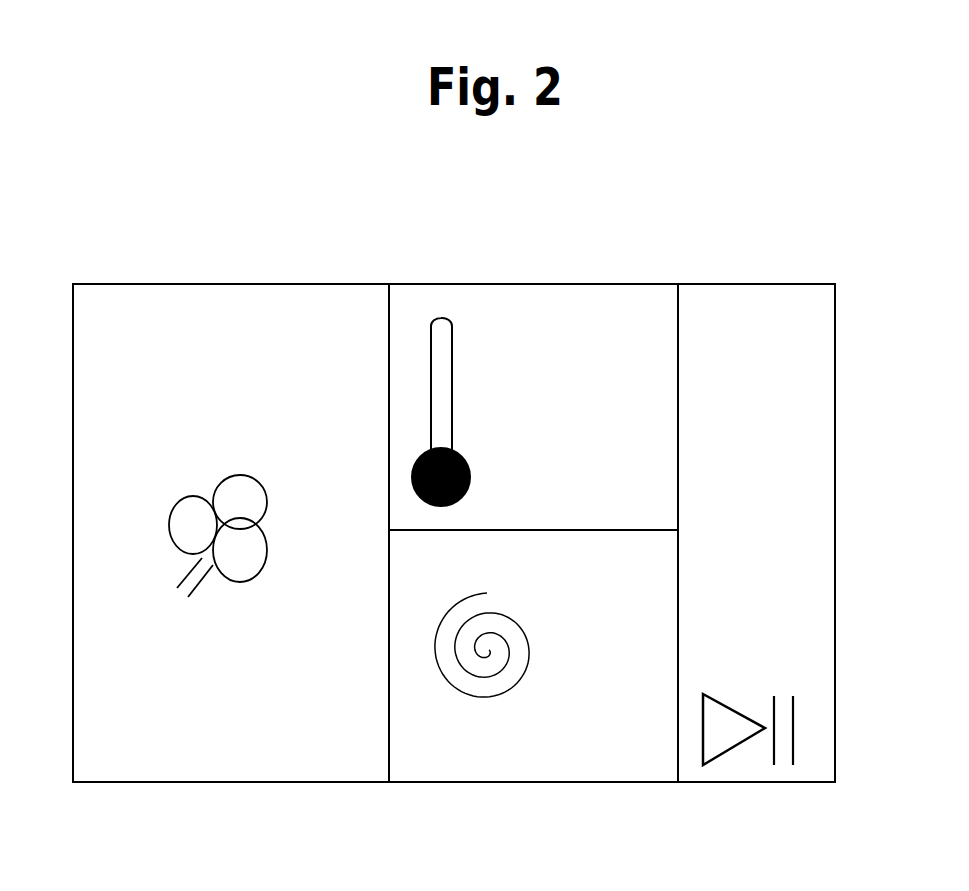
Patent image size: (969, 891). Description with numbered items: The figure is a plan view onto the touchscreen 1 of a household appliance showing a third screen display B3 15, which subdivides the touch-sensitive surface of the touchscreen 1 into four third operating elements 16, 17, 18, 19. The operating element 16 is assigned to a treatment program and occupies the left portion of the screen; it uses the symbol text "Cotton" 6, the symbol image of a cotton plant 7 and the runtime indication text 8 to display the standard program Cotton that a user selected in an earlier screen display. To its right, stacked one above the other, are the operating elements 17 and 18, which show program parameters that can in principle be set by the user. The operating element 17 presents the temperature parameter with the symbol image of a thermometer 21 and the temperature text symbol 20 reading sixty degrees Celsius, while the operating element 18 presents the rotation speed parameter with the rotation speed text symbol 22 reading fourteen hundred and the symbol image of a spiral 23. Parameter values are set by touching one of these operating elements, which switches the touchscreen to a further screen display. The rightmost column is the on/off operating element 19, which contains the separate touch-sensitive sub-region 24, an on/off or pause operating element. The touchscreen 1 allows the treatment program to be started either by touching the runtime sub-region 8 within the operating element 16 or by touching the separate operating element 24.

The touchscreen 1 is at (442, 508).
The symbol text Cotton 6 is at (155, 348).
The symbol image cotton plant 7 is at (198, 518).
The symbol indication text runtime 8 is at (185, 682).
The screen display B3 15 is at (213, 284).
The operating element treatment program Cotton 16 is at (228, 752).
The operating element for program parameter temperature 17 is at (543, 325).
The operating element for program parameter rotation speed 18 is at (553, 738).
The on/off operating element 19 is at (797, 407).
The symbol for temperature, text 60° C. 20 is at (585, 403).
The symbol for temperature, image thermometer 21 is at (443, 345).
The symbol for rotation speed, text 1400 22 is at (618, 624).
The symbol for program parameter rotation speed, image spiral 23 is at (457, 700).
The on/off operating element, touch-sensitive sub-region 24 is at (738, 712).